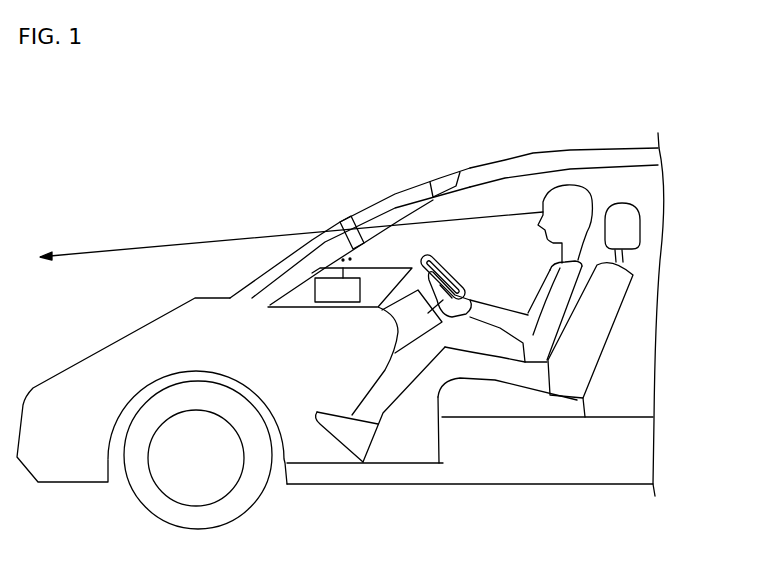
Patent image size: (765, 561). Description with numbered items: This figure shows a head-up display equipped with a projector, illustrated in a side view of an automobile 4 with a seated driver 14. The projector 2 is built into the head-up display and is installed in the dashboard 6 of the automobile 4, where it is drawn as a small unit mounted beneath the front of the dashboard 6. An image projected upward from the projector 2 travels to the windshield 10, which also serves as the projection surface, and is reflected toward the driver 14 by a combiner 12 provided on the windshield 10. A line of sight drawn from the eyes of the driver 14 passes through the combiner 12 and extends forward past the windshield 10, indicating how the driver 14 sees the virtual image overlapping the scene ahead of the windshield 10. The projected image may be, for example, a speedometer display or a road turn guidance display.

The projector 2 is at (332, 302).
The automobile 4 is at (535, 152).
The dashboard 6 is at (378, 282).
The windshield 10 is at (390, 198).
The combiner 12 is at (338, 216).
The driver 14 is at (575, 200).